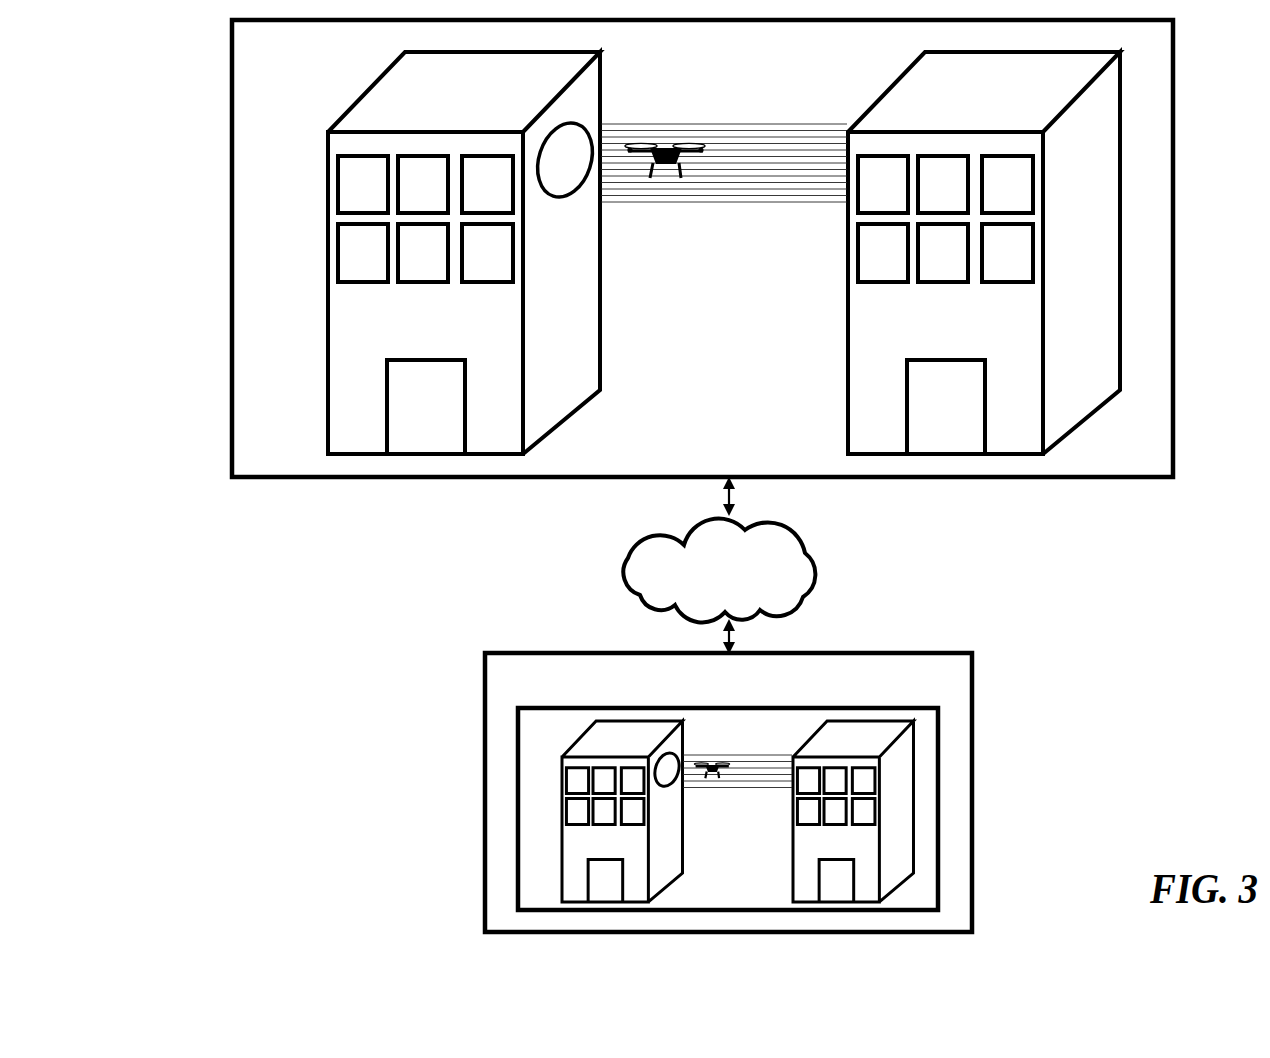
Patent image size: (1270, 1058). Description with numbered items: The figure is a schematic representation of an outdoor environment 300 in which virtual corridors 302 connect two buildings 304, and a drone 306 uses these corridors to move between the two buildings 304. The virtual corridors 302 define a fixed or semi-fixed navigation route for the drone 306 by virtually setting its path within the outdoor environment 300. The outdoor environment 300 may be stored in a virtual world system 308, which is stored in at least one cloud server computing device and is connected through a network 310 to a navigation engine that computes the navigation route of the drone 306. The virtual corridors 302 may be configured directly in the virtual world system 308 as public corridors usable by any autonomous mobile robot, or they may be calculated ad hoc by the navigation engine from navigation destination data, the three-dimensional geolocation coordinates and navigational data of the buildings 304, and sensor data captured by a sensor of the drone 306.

The outdoor environment 300 is at (128, 80).
The virtual corridors 302 is at (800, 125).
The buildings 304 is at (1120, 162).
The drone 306 is at (668, 147).
The virtual world system 308 is at (925, 633).
The network 310 is at (822, 568).